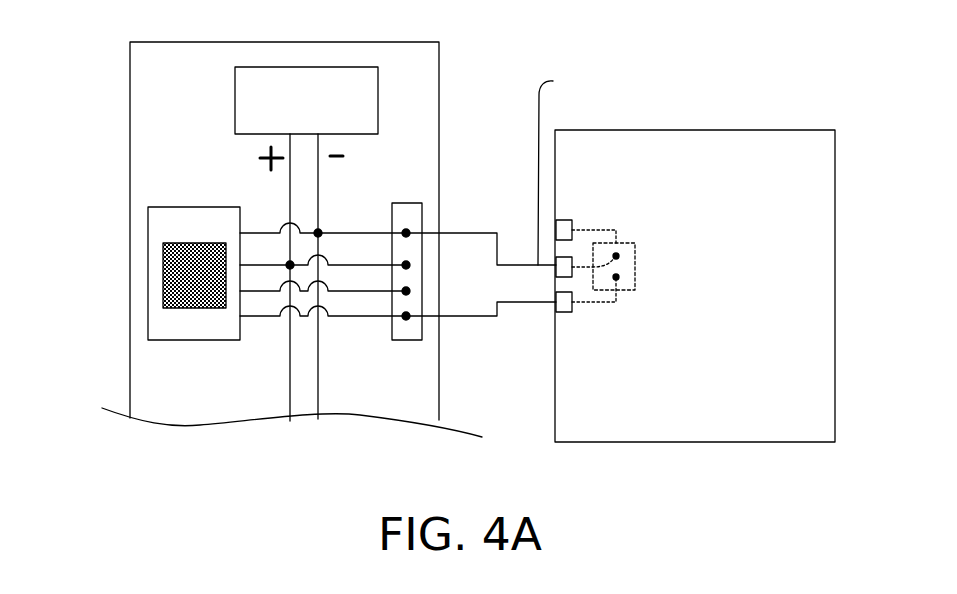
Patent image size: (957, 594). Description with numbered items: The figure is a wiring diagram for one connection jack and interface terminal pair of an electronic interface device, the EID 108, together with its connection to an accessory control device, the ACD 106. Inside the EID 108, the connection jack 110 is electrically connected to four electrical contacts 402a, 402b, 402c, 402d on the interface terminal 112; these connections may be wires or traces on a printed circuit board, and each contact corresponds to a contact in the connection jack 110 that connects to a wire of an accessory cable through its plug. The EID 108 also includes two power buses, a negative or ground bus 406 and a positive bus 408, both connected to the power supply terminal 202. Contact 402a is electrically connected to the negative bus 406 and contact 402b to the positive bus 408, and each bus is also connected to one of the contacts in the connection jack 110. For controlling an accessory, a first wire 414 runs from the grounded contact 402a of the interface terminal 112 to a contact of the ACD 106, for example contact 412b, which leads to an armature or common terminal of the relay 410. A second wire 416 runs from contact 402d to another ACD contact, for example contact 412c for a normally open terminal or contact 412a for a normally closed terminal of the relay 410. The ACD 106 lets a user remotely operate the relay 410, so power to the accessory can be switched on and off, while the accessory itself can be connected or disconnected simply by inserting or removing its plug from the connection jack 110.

The ACD 106 is at (800, 170).
The EID 108 is at (192, 88).
The connection jack 110 is at (148, 238).
The interface terminal 112 is at (413, 203).
The power supply terminal 202 is at (315, 115).
The electrical contact 402a is at (409, 231).
The electrical contact 402b is at (409, 263).
The electrical contact 402c is at (409, 293).
The electrical contact 402d is at (406, 319).
The negative bus 406 is at (317, 195).
The positive bus 408 is at (289, 173).
The relay 410 is at (635, 262).
The electrical contact 412a is at (567, 219).
The electrical contact 412b is at (568, 257).
The electrical contact 412c is at (564, 310).
The first wire 414 is at (563, 170).
The second wire 416 is at (530, 303).